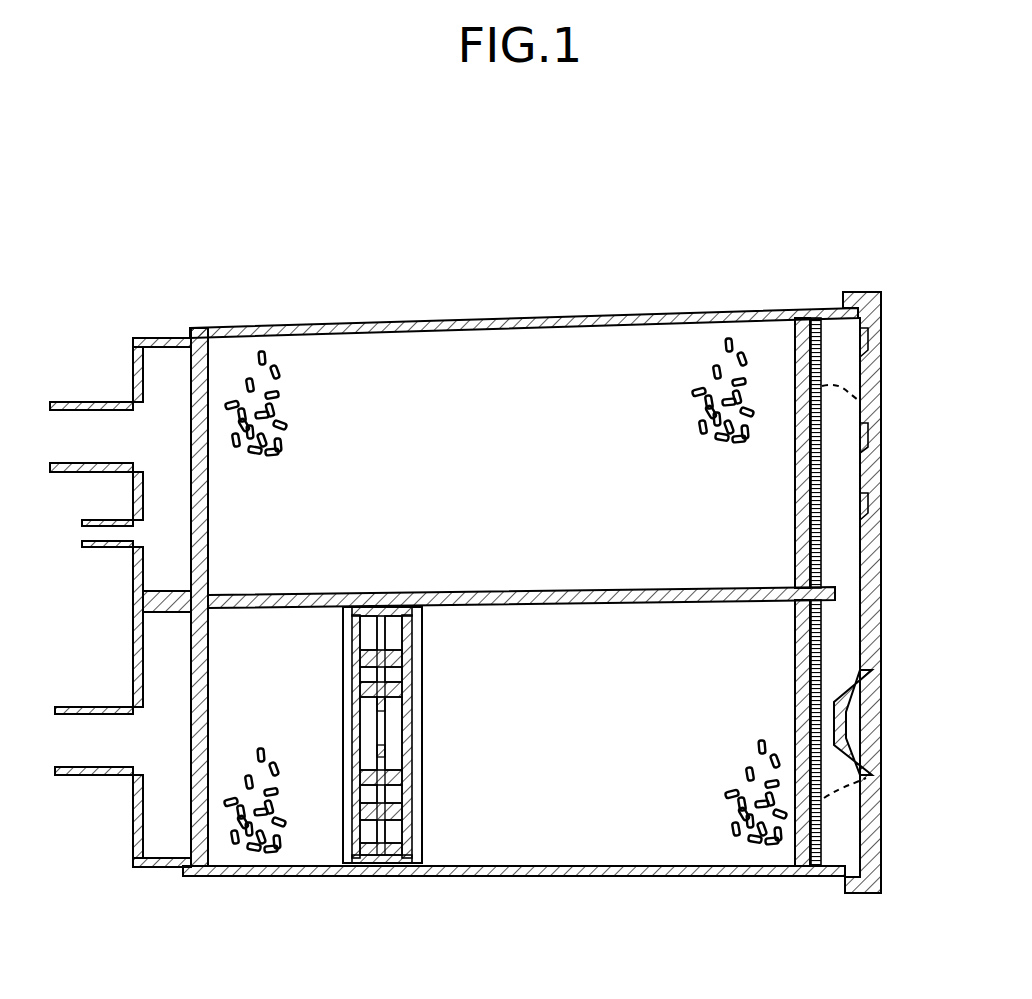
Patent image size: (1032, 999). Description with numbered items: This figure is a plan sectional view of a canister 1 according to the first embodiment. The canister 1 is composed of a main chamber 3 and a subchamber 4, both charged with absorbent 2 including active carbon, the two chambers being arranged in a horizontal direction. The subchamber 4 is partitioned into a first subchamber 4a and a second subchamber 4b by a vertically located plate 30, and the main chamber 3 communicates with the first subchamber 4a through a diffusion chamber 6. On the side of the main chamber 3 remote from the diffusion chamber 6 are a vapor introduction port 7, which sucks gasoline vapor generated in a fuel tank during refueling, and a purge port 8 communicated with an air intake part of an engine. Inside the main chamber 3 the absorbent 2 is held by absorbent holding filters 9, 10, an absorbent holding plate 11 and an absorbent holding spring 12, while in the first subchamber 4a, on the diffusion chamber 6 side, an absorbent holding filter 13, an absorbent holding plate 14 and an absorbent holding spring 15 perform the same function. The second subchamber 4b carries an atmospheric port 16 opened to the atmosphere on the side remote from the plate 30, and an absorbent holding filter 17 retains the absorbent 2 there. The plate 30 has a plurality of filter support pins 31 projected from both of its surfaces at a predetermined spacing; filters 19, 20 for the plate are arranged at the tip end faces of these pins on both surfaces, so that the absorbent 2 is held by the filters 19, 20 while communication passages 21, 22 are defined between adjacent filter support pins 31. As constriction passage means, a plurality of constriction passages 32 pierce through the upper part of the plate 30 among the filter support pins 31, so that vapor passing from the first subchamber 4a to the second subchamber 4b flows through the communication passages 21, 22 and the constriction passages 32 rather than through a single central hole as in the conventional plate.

The canister 1 is at (500, 316).
The absorbent 2 is at (248, 378).
The main chamber 3 is at (397, 355).
The subchamber 4 is at (293, 952).
The first subchamber 4a is at (445, 850).
The second subchamber 4b is at (313, 852).
The diffusion chamber 6 is at (845, 466).
The vapor introduction port 7 is at (70, 420).
The purge port 8 is at (100, 535).
The absorbent holding filter 9 is at (190, 370).
The absorbent holding filter 10 is at (795, 520).
The absorbent holding plate 11 is at (820, 340).
The absorbent holding spring 12 is at (858, 368).
The absorbent holding filter 13 is at (797, 648).
The absorbent holding plate 14 is at (825, 835).
The absorbent holding spring 15 is at (870, 760).
The atmospheric port 16 is at (88, 752).
The absorbent holding filter 17 is at (190, 665).
The filter for the plate 19 is at (400, 633).
The filter for the plate 20 is at (362, 625).
The communication passage 21 is at (393, 735).
The communication passage 22 is at (368, 733).
The plate 30 is at (372, 790).
The filter support pin 31 is at (365, 690).
The constriction passage 32 is at (387, 710).